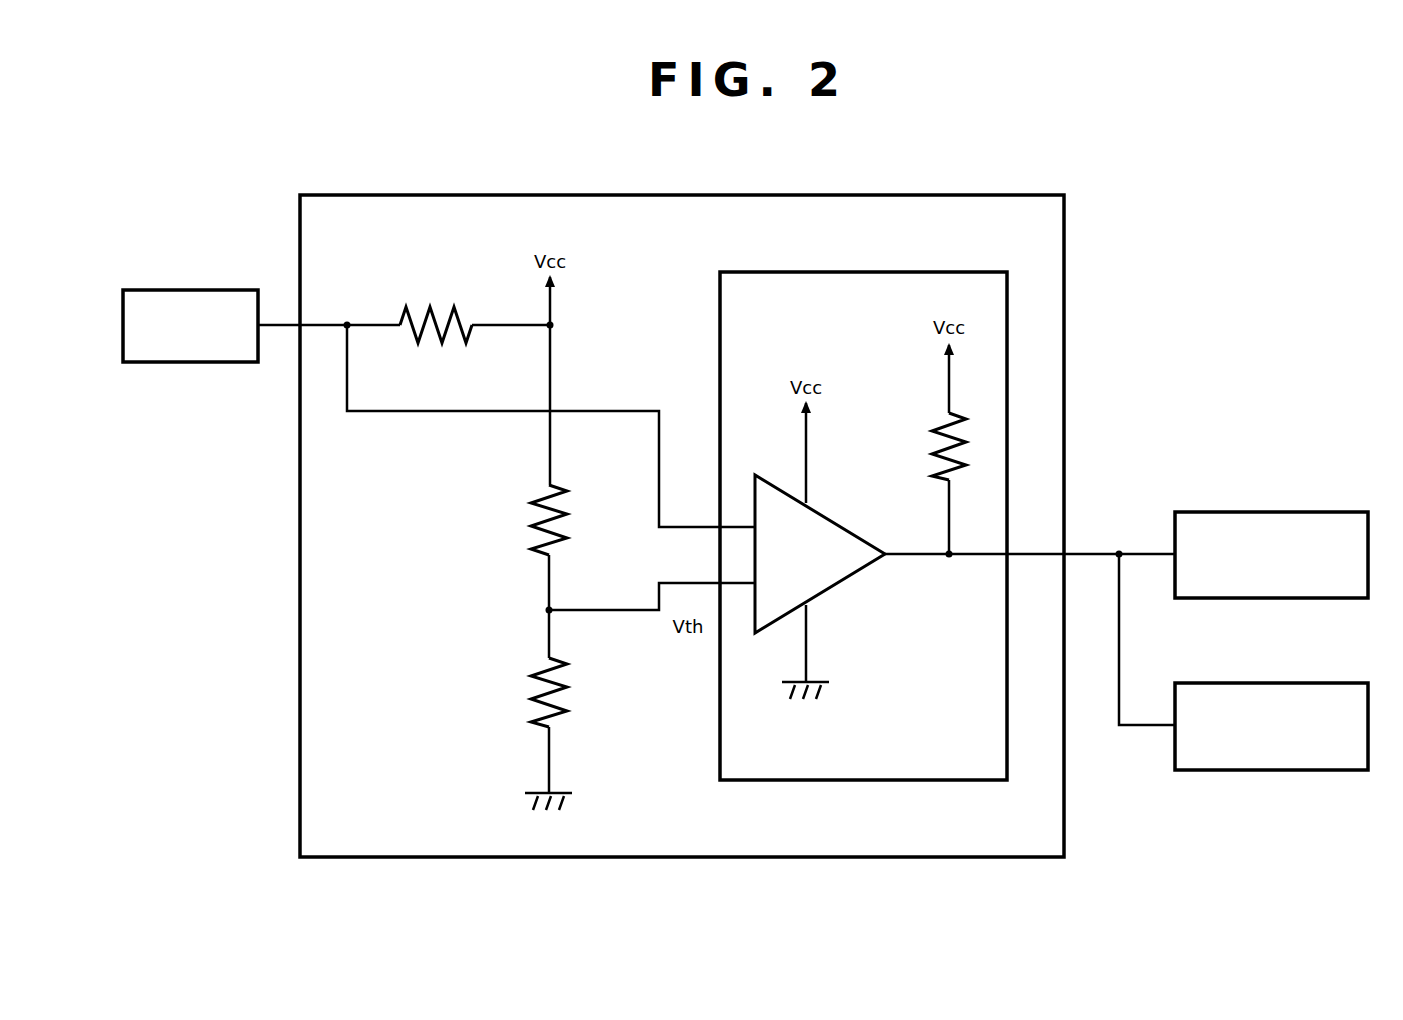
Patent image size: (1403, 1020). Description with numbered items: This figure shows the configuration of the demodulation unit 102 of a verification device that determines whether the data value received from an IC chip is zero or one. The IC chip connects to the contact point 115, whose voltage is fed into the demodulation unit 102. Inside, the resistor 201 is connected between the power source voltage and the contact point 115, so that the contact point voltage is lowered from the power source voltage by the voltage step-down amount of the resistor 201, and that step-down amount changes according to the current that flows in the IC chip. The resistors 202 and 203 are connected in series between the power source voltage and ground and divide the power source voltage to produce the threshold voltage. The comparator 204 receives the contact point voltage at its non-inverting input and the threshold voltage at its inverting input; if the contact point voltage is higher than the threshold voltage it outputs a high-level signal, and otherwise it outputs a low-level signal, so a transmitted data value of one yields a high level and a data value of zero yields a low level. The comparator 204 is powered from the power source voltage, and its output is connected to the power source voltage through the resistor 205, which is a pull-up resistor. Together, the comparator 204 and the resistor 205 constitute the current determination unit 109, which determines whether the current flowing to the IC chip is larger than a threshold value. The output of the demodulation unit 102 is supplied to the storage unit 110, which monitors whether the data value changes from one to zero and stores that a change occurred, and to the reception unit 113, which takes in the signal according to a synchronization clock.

The demodulation unit 102 is at (925, 195).
The current determination unit 109 is at (915, 780).
The storage unit 110 is at (1307, 512).
The reception unit 113 is at (1307, 683).
The contact point 115 is at (192, 290).
The resistor 201 is at (439, 304).
The resistor 202 is at (520, 517).
The resistor 203 is at (520, 692).
The comparator 204 is at (843, 583).
The pull-up resistor 205 is at (930, 445).